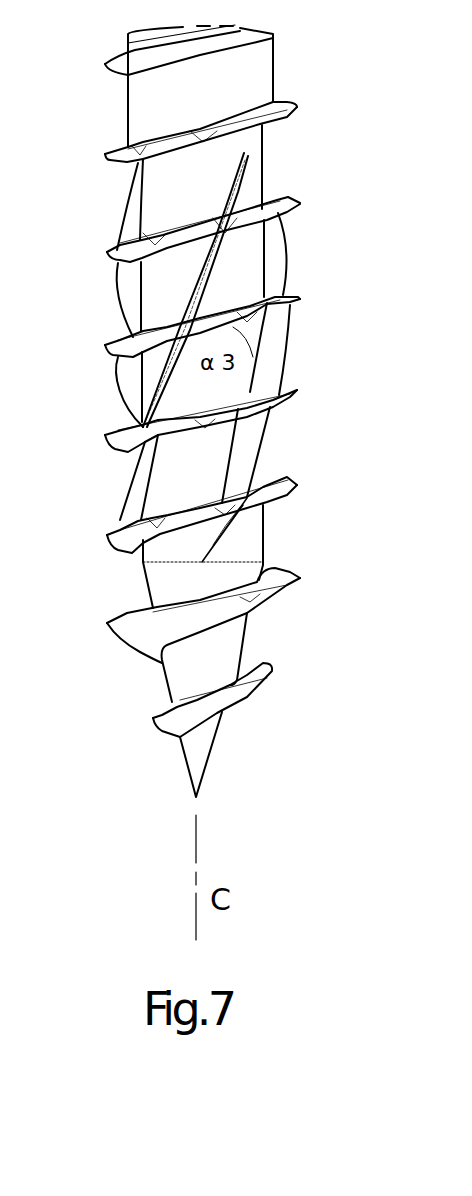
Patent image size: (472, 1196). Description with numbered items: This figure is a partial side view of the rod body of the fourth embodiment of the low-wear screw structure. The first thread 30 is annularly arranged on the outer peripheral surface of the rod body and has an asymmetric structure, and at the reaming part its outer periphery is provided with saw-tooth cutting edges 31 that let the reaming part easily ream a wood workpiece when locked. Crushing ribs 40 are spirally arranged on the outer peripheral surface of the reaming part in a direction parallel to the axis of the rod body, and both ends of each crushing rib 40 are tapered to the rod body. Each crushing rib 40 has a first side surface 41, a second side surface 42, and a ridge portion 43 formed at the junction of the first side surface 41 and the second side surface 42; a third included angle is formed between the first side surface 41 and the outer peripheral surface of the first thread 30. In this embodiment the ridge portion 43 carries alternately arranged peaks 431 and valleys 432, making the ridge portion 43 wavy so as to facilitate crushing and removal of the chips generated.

The first thread 30 is at (262, 44).
The saw-tooth cutting edges 31 is at (288, 206).
The crushing rib 40 is at (296, 256).
The first side surface 41 is at (278, 279).
The second side surface 42 is at (136, 462).
The ridge portion 43 is at (287, 352).
The peaks 431 is at (267, 448).
The valleys 432 is at (273, 412).